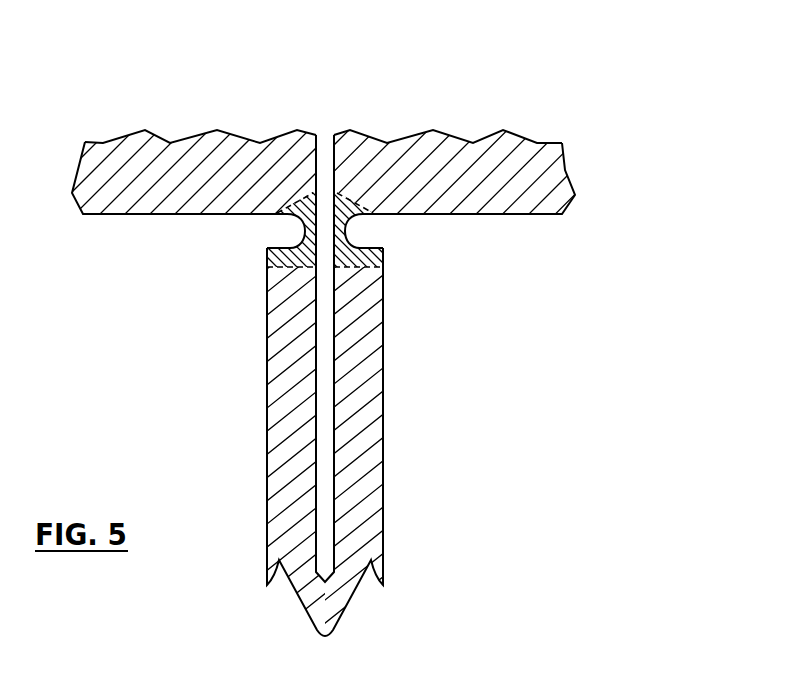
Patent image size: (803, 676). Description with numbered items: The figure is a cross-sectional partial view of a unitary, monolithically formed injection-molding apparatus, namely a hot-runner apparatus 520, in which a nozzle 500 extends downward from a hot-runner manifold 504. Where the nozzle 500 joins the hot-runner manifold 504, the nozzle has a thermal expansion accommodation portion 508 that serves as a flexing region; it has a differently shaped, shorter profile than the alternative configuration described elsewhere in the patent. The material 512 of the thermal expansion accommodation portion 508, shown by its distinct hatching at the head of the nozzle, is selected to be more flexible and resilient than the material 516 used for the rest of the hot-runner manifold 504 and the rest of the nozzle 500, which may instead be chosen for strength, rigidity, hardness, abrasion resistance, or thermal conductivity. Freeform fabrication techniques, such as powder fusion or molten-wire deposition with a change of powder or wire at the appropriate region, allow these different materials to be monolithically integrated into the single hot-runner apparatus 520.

The nozzle 500 is at (390, 447).
The hot-runner manifold 504 is at (444, 126).
The thermal expansion accommodation portion 508 is at (241, 244).
The material 512 is at (350, 228).
The material(s) 516 is at (148, 198).
The hot-runner apparatus 520 is at (580, 131).